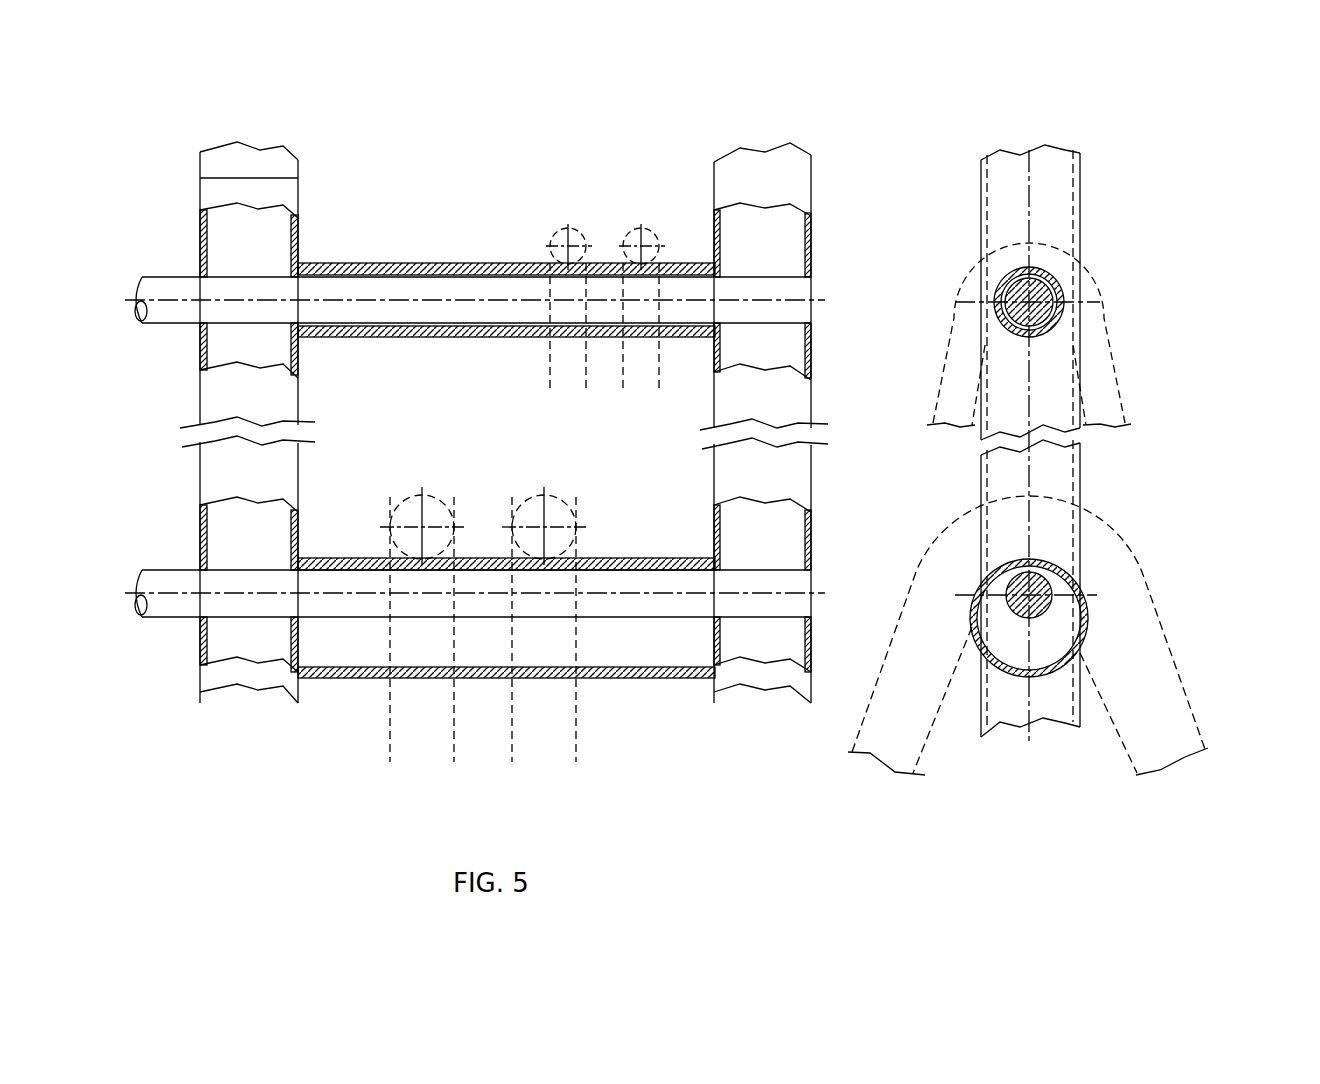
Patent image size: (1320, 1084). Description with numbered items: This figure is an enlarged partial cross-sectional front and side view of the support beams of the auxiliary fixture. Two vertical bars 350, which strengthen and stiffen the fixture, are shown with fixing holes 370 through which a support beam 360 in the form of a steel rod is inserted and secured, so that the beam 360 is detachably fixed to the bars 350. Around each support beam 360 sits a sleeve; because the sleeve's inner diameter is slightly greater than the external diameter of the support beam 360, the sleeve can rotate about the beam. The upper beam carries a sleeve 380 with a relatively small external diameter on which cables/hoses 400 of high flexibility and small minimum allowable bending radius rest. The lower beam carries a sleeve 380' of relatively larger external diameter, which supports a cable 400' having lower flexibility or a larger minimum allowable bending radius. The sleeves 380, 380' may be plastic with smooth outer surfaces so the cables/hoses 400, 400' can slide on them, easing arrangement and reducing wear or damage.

The vertical bars 350 is at (272, 230).
The support beam 360 is at (800, 293).
The fixing holes 370 is at (826, 333).
The sleeve 380 is at (764, 234).
The sleeve 380' is at (781, 667).
The cables/hoses 400 is at (887, 288).
The cable 400' is at (835, 619).